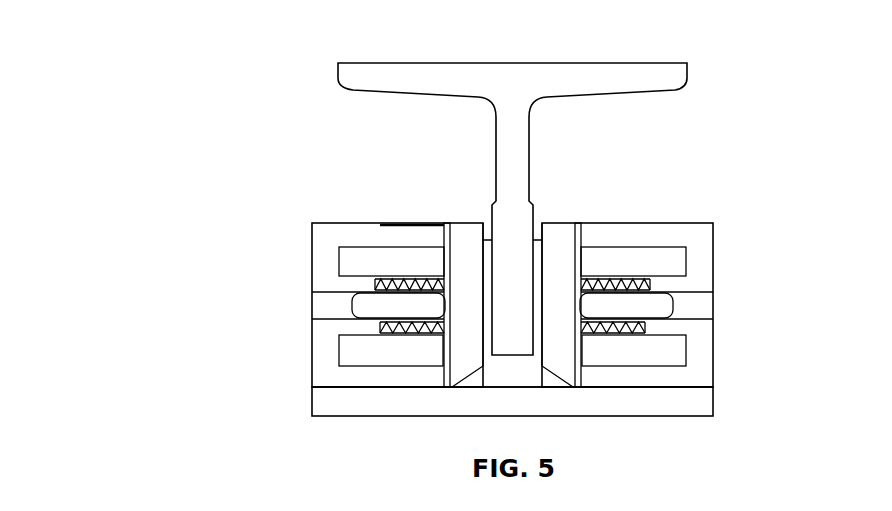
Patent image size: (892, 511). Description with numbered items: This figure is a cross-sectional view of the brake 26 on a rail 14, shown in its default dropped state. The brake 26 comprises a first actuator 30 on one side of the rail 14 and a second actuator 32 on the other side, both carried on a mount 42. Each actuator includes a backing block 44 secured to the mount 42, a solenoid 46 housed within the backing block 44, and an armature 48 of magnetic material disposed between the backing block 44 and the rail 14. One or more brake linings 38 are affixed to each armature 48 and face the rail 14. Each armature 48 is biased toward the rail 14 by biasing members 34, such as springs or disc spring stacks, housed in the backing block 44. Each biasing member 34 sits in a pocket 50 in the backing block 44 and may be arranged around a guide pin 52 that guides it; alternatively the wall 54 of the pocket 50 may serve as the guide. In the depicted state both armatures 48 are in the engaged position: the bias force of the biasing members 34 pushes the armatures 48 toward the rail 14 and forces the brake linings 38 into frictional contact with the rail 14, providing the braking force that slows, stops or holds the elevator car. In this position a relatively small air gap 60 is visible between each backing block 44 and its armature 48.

The brake 26 is at (153, 64).
The rail 14 is at (687, 63).
The first actuator 30 is at (312, 260).
The second actuator 32 is at (713, 258).
The biasing member 34 is at (387, 283).
The brake lining 38 is at (487, 277).
The mount 42 is at (700, 403).
The backing block 44 is at (323, 370).
The solenoid 46 is at (363, 260).
The armature 48 is at (445, 225).
The pocket 50 is at (380, 323).
The guide pin 52 is at (380, 308).
The pocket wall 54 is at (380, 326).
The air gap 60 is at (447, 233).